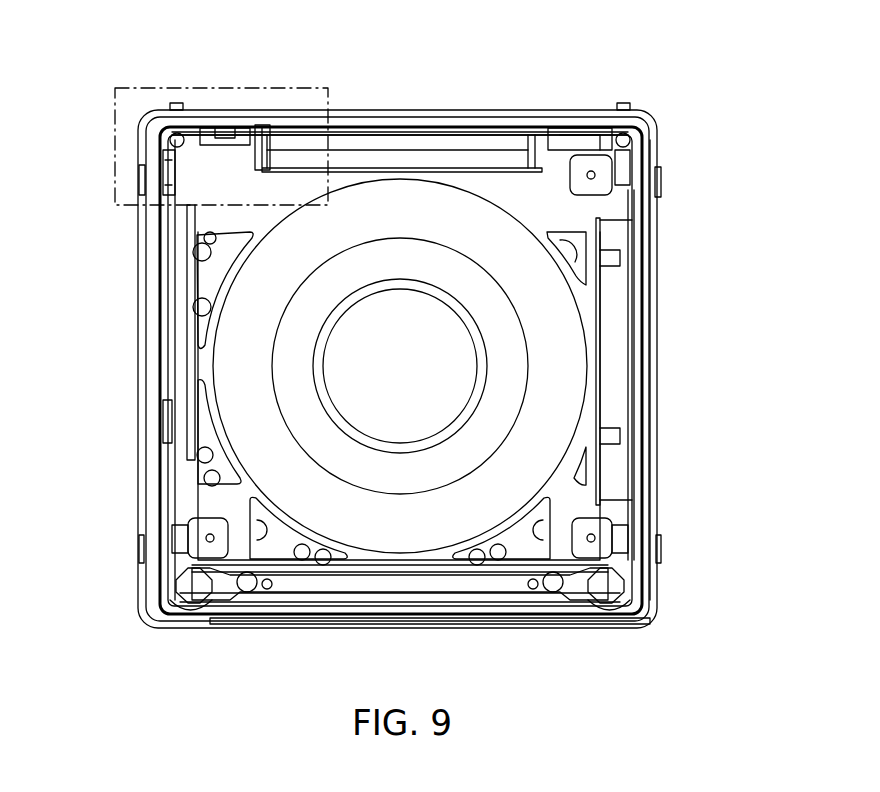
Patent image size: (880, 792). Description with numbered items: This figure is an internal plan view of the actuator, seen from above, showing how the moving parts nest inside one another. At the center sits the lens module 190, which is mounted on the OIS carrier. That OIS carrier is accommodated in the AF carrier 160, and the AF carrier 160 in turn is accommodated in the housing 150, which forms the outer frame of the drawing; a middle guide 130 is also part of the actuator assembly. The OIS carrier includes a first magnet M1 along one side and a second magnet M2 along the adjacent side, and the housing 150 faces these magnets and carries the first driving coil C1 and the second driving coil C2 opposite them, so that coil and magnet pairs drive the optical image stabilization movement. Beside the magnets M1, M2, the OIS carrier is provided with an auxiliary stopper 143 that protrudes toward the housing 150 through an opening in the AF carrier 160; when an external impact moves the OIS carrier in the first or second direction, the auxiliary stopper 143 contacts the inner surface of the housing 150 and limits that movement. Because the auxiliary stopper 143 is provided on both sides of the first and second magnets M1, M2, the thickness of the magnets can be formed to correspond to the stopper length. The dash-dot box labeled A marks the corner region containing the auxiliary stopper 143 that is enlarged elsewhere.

The enlarged region A is at (220, 88).
The middle guide 130 is at (590, 205).
The auxiliary stopper 143 is at (258, 128).
The housing 150 is at (560, 118).
The AF carrier 160 is at (173, 245).
The lens module 190 is at (553, 305).
The first driving coil C1 is at (647, 363).
The second driving coil C2 is at (398, 118).
The first magnet M1 is at (618, 415).
The second magnet M2 is at (473, 127).